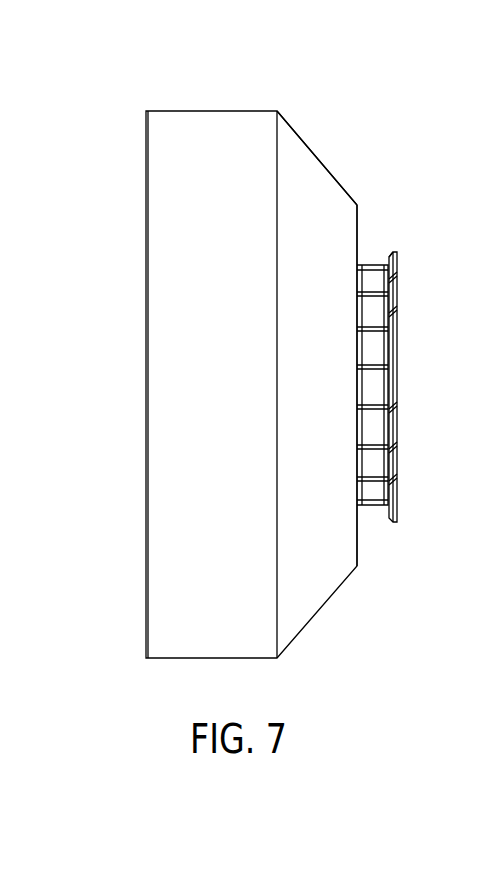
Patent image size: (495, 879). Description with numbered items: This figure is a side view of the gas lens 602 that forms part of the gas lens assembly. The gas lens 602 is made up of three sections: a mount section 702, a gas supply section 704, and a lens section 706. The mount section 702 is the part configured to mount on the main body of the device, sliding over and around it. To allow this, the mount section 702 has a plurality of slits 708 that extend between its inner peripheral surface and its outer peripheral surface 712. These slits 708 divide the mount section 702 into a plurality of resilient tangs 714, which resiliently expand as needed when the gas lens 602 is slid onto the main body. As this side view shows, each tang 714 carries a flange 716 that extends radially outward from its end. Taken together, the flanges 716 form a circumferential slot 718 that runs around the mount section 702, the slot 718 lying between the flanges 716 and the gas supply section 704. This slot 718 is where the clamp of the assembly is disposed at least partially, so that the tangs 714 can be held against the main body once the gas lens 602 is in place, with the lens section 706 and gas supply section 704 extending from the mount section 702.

The gas lens 602 is at (133, 82).
The mount section 702 is at (395, 252).
The gas supply section 704 is at (359, 205).
The lens section 706 is at (305, 141).
The slits 708 is at (396, 278).
The outer peripheral surface 712 is at (370, 384).
The resilient tangs 714 is at (396, 434).
The flange 716 is at (392, 252).
The circumferential slot 718 is at (376, 518).